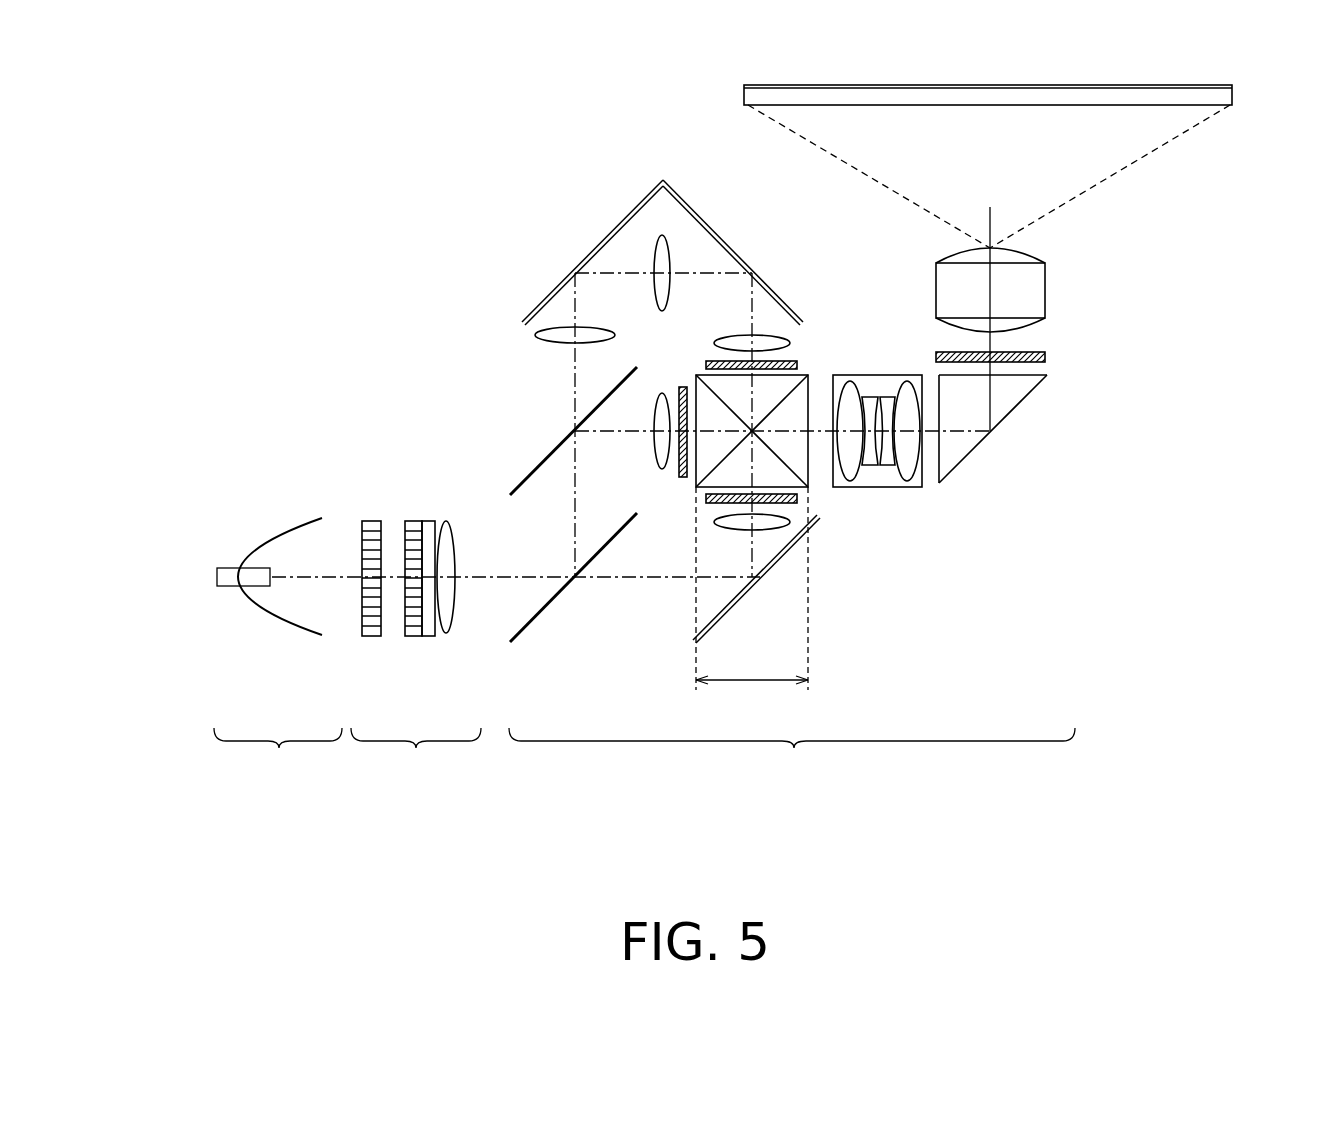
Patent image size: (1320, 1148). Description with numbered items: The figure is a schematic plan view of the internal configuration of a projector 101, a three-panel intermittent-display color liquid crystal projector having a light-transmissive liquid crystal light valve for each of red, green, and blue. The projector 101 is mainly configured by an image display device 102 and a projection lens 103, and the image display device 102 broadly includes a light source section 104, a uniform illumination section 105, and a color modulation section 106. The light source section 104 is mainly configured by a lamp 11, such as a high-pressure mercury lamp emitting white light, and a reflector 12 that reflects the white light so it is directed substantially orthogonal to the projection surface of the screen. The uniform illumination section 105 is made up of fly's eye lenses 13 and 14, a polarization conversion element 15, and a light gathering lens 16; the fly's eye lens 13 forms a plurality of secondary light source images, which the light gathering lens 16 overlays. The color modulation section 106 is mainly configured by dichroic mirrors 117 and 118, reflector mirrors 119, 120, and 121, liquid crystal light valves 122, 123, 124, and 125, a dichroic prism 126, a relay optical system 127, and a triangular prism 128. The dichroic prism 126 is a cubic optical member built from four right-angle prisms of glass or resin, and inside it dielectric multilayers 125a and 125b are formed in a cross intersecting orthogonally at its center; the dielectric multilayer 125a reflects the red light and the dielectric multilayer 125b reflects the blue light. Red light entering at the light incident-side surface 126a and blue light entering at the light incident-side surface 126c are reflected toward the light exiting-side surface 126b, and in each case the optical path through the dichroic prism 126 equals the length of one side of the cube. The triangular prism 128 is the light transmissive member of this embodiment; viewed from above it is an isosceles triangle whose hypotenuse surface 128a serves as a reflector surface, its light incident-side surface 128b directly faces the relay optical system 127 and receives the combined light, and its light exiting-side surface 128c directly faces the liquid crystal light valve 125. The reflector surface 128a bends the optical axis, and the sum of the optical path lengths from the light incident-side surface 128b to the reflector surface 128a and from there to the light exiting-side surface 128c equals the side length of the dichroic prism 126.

The lamp 11 is at (232, 588).
The reflector 12 is at (284, 621).
The fly's eye lens 13 is at (370, 519).
The fly's eye lens 14 is at (413, 519).
The polarization conversion element 15 is at (430, 637).
The light gathering lens 16 is at (449, 637).
The projector 101 is at (282, 197).
The image display device 102 is at (405, 257).
The projection lens 103 is at (1046, 290).
The light source section 104 is at (272, 651).
The uniform illumination section 105 is at (416, 614).
The color modulation section 106 is at (809, 467).
The dichroic mirror 117 is at (557, 598).
The dichroic mirror 118 is at (540, 463).
The reflector mirror 119 is at (762, 585).
The reflector mirror 120 is at (616, 230).
The reflector mirror 121 is at (720, 230).
The liquid crystal light valve 122 is at (800, 397).
The liquid crystal light valve 123 is at (683, 479).
The liquid crystal light valve 124 is at (778, 463).
The liquid crystal light valve 125 is at (1047, 357).
The dielectric multilayer 125a is at (706, 364).
The dielectric multilayer 125b is at (800, 497).
The dichroic prism 126 is at (836, 377).
The light incident-side surface 126a is at (792, 344).
The light exiting-side surface 126b is at (812, 466).
The light incident-side surface 126c is at (716, 523).
The relay optical system 127 is at (905, 375).
The triangular prism 128 is at (1018, 405).
The reflector surface 128a is at (1005, 418).
The light incident-side surface 128b is at (939, 484).
The light exiting-side surface 128c is at (1047, 377).